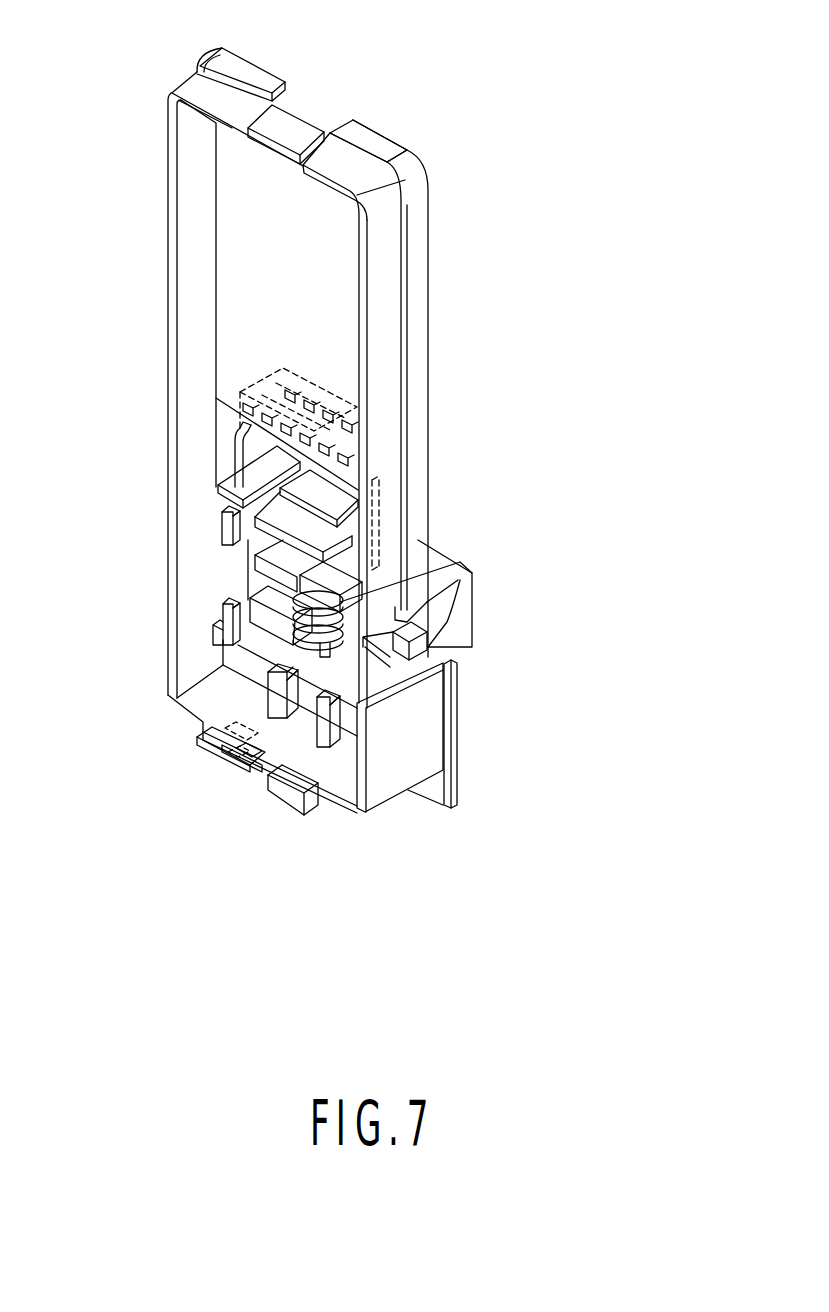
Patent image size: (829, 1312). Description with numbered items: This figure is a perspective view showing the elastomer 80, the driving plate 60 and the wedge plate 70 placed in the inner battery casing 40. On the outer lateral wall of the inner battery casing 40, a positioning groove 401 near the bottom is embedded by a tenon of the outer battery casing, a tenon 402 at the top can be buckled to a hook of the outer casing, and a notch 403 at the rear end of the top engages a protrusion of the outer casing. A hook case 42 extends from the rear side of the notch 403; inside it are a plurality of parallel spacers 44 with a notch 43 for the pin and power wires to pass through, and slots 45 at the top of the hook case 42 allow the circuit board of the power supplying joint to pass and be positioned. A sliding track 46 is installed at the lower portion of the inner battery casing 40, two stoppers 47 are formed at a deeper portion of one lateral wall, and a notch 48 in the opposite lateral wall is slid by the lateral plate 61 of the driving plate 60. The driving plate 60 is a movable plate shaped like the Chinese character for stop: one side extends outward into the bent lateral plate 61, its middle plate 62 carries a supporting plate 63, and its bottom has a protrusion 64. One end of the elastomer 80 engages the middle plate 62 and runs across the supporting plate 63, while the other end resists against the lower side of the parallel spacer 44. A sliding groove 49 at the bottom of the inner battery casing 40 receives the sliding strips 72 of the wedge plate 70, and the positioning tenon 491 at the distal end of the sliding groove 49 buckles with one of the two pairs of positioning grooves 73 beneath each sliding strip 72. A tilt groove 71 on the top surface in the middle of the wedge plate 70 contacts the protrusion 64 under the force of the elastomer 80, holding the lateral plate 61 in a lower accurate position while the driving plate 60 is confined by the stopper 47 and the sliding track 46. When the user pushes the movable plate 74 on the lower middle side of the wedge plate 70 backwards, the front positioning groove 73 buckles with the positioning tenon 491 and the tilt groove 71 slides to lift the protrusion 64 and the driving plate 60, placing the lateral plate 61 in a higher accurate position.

The inner battery casing 40 is at (428, 248).
The positioning groove 401 is at (195, 72).
The tenon 402 is at (273, 137).
The notch 403 is at (330, 133).
The notch 43 is at (250, 488).
The slots 45 is at (365, 418).
The hook case 42 is at (400, 462).
The parallel spacer 44 is at (405, 535).
The stoppers 47 is at (228, 525).
The driving plate 60 is at (245, 585).
The elastomer 80 is at (295, 602).
The lateral plate 61 is at (458, 603).
The supporting plate 63 is at (455, 662).
The notch 48 is at (400, 682).
The middle plate 62 is at (250, 647).
The sliding track 46 is at (327, 730).
The sliding strips 72 is at (232, 738).
The positioning grooves 73 is at (258, 710).
The positioning tenon 491 is at (225, 758).
The tilt groove 71 is at (242, 760).
The wedge plate 70 is at (250, 760).
The protrusion 64 is at (263, 773).
The movable plate 74 is at (287, 807).
The sliding groove 49 is at (317, 817).